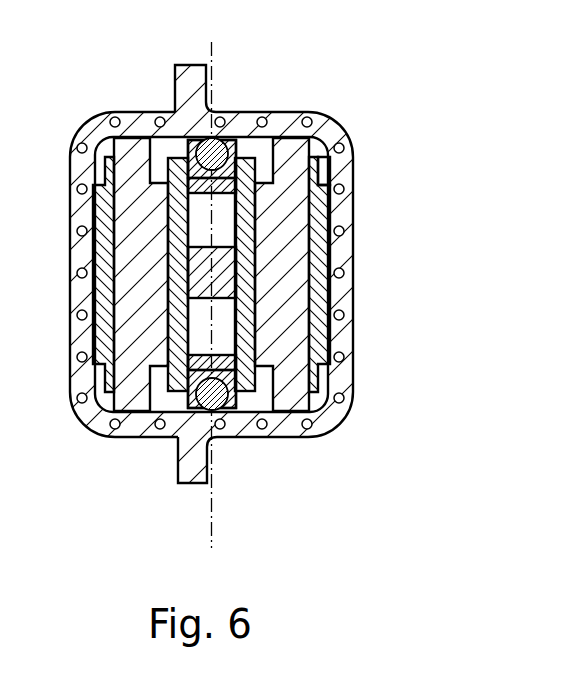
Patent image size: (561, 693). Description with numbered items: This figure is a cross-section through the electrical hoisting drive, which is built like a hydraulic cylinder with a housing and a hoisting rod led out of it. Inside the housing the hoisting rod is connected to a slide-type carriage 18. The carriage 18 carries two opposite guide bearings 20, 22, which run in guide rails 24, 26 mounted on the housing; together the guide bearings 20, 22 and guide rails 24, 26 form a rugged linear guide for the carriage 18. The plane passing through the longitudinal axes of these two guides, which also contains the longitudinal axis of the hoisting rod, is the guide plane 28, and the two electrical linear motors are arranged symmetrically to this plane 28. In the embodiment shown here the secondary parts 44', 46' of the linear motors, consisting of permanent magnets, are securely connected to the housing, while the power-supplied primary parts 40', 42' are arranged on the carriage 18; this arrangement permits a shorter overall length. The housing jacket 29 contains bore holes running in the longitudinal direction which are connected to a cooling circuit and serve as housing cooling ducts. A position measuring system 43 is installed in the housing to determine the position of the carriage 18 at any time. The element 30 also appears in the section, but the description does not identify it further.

The carriage 18 is at (222, 262).
The guide bearing 20 is at (233, 406).
The guide bearing 22 is at (240, 137).
The guide rail 24 is at (170, 438).
The guide rail 26 is at (176, 112).
The guide plane 28 is at (212, 523).
The housing jacket 29 is at (343, 343).
The housing inner wall 30 is at (342, 412).
The primary part 40' is at (64, 274).
The primary part 42' is at (340, 274).
The position measuring system 43 is at (318, 150).
The secondary part 44' is at (90, 274).
The secondary part 46' is at (367, 274).